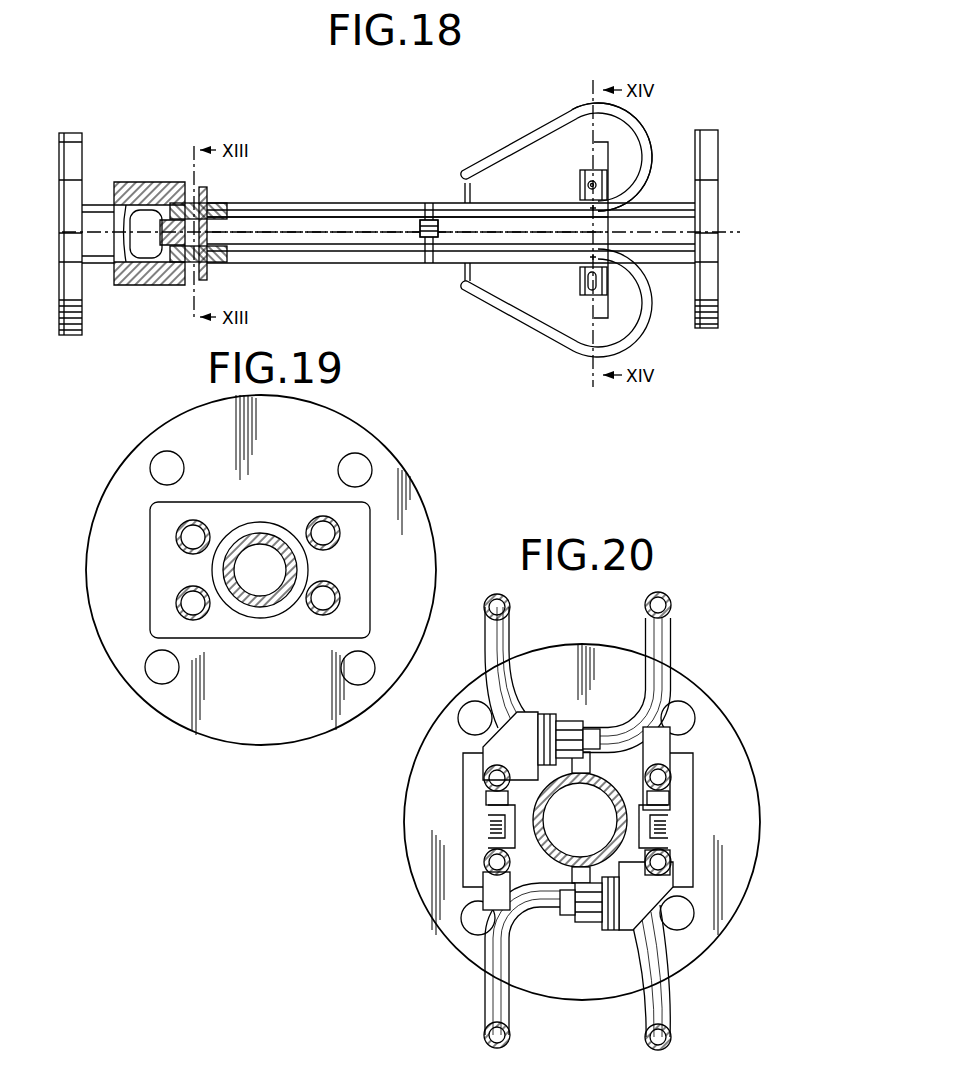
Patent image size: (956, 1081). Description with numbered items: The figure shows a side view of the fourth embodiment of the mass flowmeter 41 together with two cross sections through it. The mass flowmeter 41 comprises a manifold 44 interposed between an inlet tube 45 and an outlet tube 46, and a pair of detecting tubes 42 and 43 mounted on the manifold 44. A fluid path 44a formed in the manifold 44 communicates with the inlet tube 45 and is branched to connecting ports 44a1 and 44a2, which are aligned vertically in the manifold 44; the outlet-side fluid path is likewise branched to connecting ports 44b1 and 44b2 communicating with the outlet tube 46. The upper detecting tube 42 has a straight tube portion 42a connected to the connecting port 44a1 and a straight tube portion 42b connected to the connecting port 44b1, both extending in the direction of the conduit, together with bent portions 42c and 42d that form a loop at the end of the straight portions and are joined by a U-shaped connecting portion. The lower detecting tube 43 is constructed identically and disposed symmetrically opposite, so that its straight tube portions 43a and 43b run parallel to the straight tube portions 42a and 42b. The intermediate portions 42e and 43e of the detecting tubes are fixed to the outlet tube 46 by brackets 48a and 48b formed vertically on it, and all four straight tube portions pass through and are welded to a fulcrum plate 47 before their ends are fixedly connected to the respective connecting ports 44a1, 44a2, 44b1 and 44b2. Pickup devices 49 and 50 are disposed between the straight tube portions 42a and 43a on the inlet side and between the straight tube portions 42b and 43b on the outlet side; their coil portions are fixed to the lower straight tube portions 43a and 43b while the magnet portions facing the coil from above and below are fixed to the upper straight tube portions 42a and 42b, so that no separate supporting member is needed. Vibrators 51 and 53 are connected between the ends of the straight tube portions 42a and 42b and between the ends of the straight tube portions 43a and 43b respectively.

In FIG. 18, the mass flowmeter 41 is at (553, 99).
In FIG. 20, the mass flowmeter 41 is at (570, 718).
In FIG. 18, the detecting tube 42 is at (287, 203).
In FIG. 20, the straight tube portion 42a is at (483, 780).
In FIG. 20, the straight tube portion 42b is at (672, 777).
In FIG. 18, the bent portion 42c is at (643, 142).
In FIG. 18, the bent portion 42d is at (612, 157).
In FIG. 18, the intermediate portion 42e is at (476, 172).
In FIG. 20, the intermediate portion 42e is at (630, 718).
In FIG. 18, the detecting tube 43 is at (364, 266).
In FIG. 20, the straight tube portion 43a is at (487, 862).
In FIG. 20, the straight tube portion 43b is at (668, 858).
In FIG. 20, the intermediate portion 43e is at (503, 979).
In FIG. 18, the manifold 44 is at (150, 182).
In FIG. 19, the manifold 44 is at (264, 498).
In FIG. 18, the fluid path 44a is at (140, 262).
In FIG. 18, the connecting port 44a1 is at (168, 208).
In FIG. 19, the connecting port 44a1 is at (180, 537).
In FIG. 18, the connecting port 44a2 is at (165, 263).
In FIG. 19, the connecting port 44a2 is at (188, 607).
In FIG. 19, the connecting port 44b1 is at (333, 536).
In FIG. 19, the connecting port 44b2 is at (322, 612).
In FIG. 18, the inlet tube 45 is at (100, 252).
In FIG. 18, the outlet tube 46 is at (383, 226).
In FIG. 19, the outlet tube 46 is at (253, 600).
In FIG. 20, the outlet tube 46 is at (550, 835).
In FIG. 18, the fulcrum plate 47 is at (207, 232).
In FIG. 18, the bracket 48a is at (472, 196).
In FIG. 20, the bracket 48a is at (585, 763).
In FIG. 18, the bracket 48b is at (488, 286).
In FIG. 20, the bracket 48b is at (500, 878).
In FIG. 18, the pickup device 49 is at (439, 231).
In FIG. 20, the pickup device 49 is at (478, 806).
In FIG. 18, the pickup device 50 is at (429, 228).
In FIG. 20, the pickup device 50 is at (672, 812).
In FIG. 18, the vibrator 51 is at (581, 185).
In FIG. 20, the vibrator 53 is at (585, 925).